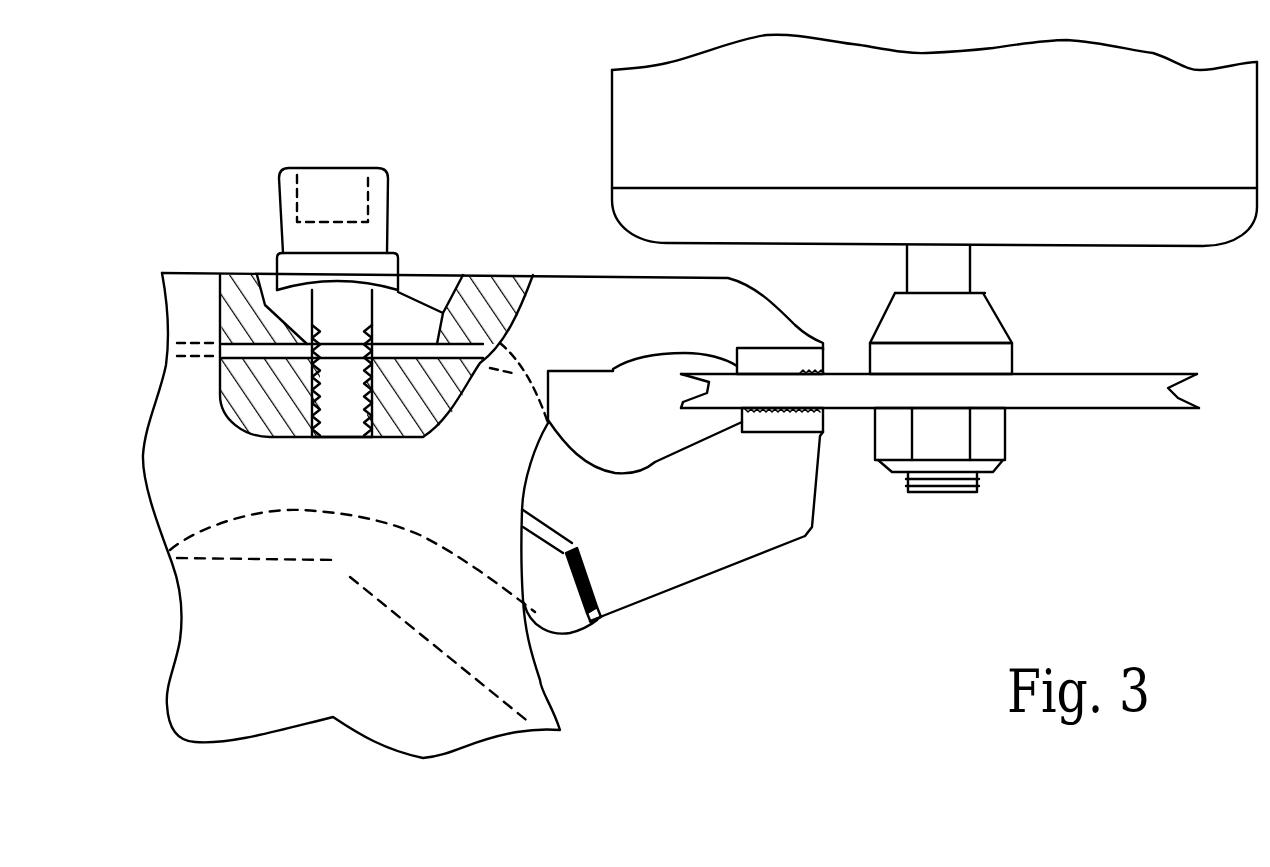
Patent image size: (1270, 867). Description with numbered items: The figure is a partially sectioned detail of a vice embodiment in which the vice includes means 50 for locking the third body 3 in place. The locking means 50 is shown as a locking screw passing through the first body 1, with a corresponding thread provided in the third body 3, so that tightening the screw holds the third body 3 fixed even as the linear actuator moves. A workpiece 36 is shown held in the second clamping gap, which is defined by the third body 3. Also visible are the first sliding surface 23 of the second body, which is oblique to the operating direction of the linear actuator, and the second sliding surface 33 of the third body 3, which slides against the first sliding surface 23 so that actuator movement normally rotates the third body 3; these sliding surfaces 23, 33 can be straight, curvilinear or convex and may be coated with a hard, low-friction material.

The first body 1 is at (610, 313).
The third body 3 is at (703, 515).
The first sliding surface 23 is at (350, 573).
The second sliding surface 33 is at (423, 533).
The workpiece 36 is at (823, 393).
The means for locking 50 is at (360, 240).